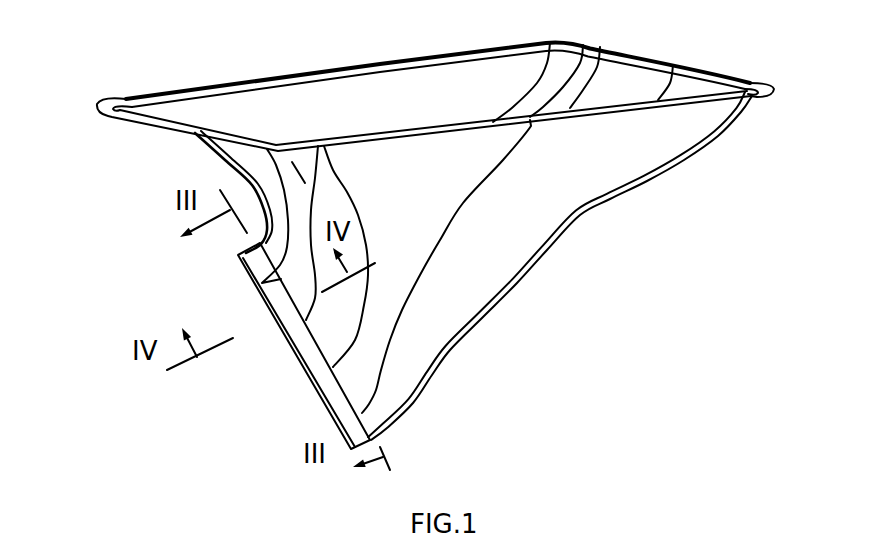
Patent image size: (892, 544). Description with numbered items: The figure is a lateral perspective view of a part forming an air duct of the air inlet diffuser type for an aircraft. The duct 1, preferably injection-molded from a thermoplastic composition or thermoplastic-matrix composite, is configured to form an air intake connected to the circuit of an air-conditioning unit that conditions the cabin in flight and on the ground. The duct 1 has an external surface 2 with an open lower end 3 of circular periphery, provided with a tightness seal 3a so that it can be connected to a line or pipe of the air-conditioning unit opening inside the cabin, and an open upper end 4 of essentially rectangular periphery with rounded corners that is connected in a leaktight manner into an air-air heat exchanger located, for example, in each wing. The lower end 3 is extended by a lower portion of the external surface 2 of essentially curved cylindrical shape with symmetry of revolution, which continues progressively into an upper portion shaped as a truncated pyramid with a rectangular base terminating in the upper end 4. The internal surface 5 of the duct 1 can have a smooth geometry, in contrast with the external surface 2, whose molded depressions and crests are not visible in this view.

The duct 1 is at (572, 272).
The external surface 2 is at (580, 214).
The lower end 3 is at (261, 290).
The tightness seal 3a is at (305, 386).
The upper end 4 is at (150, 100).
The internal surface 5 is at (410, 113).